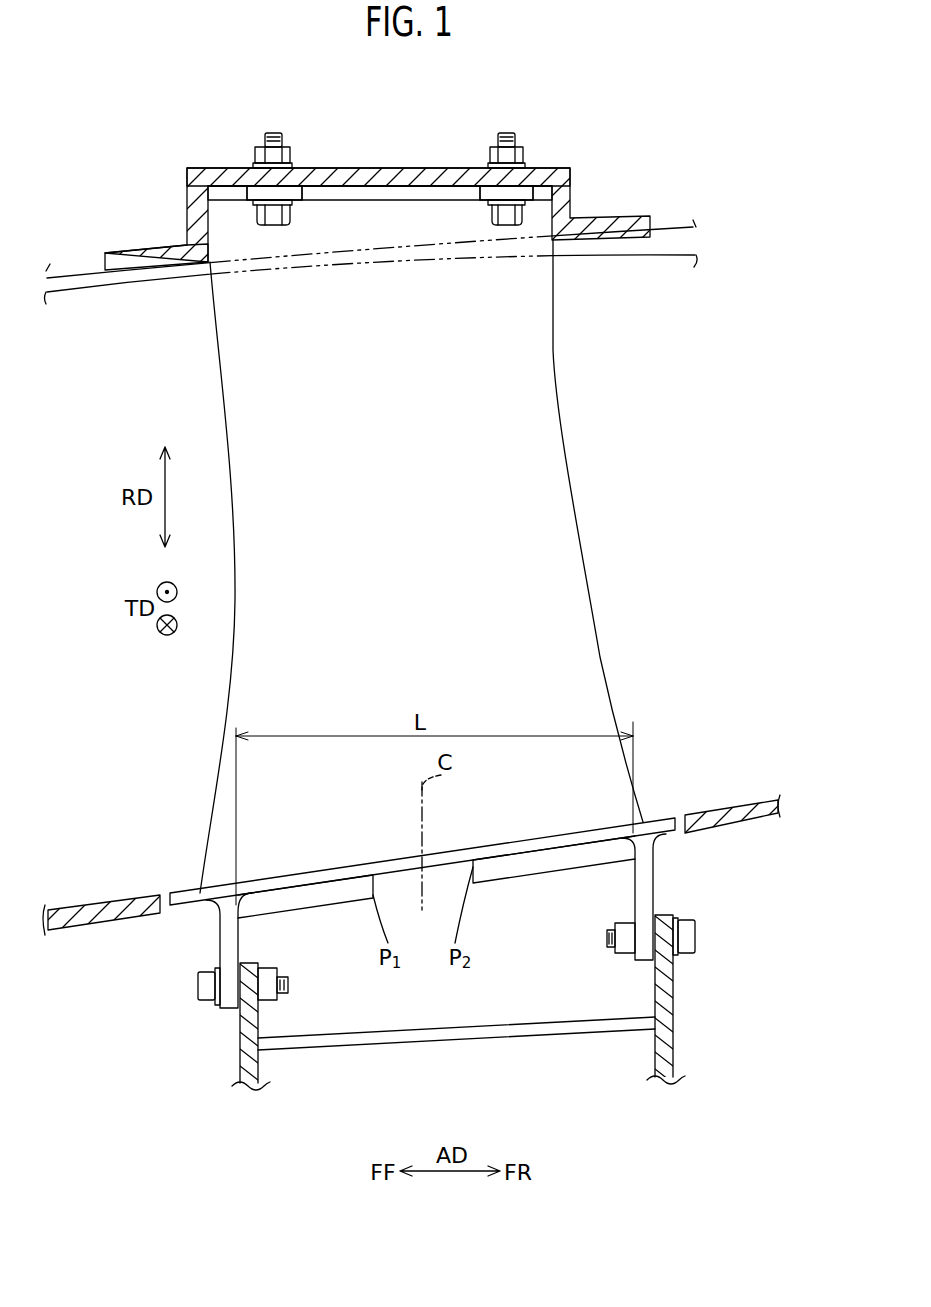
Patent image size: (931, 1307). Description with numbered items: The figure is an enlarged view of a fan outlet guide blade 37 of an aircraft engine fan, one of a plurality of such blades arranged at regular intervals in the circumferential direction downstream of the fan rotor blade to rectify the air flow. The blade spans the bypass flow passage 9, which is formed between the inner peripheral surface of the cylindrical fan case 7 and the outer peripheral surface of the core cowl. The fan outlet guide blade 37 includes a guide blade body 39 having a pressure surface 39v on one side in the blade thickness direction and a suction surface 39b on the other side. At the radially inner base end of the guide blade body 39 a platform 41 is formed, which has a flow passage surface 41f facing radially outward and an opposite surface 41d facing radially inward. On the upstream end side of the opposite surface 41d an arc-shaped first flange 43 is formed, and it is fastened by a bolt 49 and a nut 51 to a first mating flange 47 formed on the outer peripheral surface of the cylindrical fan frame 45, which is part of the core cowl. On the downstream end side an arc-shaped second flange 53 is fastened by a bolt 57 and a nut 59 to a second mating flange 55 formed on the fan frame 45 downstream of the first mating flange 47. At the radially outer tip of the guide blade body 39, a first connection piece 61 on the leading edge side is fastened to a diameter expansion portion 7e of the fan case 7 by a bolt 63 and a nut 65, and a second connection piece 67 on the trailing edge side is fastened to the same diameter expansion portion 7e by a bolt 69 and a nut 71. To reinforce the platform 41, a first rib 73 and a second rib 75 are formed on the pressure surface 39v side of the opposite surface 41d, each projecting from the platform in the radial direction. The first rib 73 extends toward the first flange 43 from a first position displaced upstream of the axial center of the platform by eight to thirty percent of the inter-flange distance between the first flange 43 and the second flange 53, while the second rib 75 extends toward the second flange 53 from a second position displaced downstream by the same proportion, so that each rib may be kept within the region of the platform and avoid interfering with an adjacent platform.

The fan case 7 is at (612, 227).
The diameter expansion portion 7e is at (350, 167).
The bypass flow passage 9 is at (160, 303).
The fan outlet guide blade 37 is at (433, 566).
The guide blade body 39 is at (388, 483).
The pressure surface 39v is at (555, 440).
The suction surface 39b is at (530, 485).
The platform 41 is at (330, 867).
The flow passage surface 41f is at (508, 843).
The opposite surface 41d is at (538, 853).
The first flange 43 is at (222, 943).
The fan frame 45 is at (472, 1002).
The first mating flange 47 is at (240, 1040).
The bolt 49 is at (198, 989).
The nut 51 is at (287, 1000).
The second flange 53 is at (645, 880).
The second mating flange 55 is at (675, 983).
The bolt 57 is at (695, 935).
The nut 59 is at (615, 954).
The first connection piece 61 is at (300, 197).
The bolt 63 is at (280, 217).
The nut 65 is at (289, 148).
The second connection piece 67 is at (480, 195).
The bolt 69 is at (512, 215).
The nut 71 is at (518, 146).
The first rib 73 is at (333, 900).
The second rib 75 is at (583, 853).